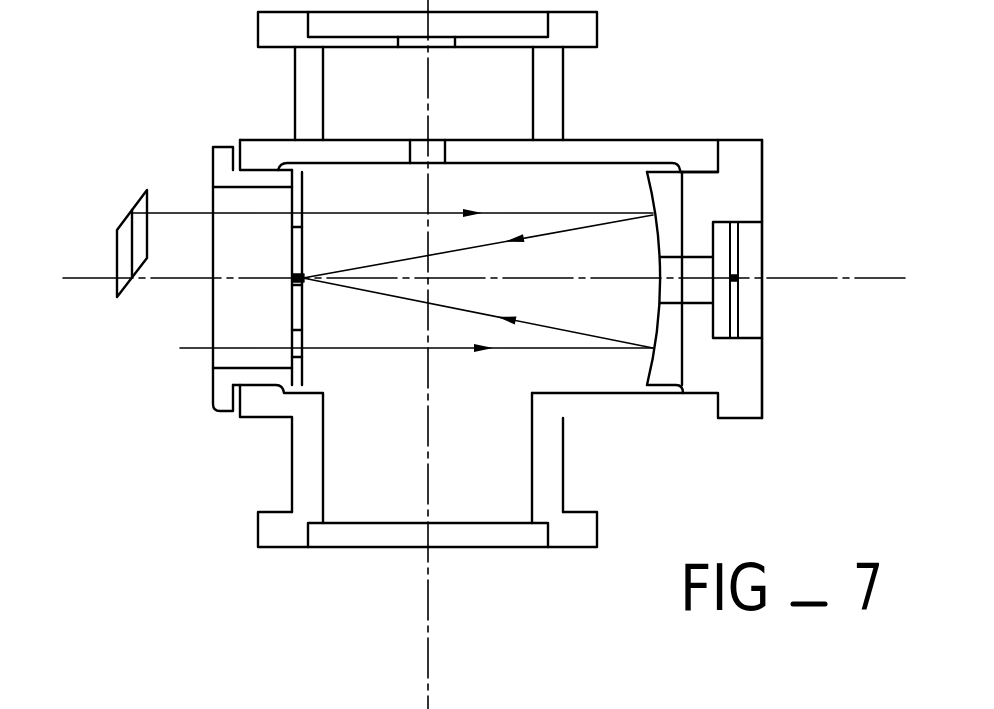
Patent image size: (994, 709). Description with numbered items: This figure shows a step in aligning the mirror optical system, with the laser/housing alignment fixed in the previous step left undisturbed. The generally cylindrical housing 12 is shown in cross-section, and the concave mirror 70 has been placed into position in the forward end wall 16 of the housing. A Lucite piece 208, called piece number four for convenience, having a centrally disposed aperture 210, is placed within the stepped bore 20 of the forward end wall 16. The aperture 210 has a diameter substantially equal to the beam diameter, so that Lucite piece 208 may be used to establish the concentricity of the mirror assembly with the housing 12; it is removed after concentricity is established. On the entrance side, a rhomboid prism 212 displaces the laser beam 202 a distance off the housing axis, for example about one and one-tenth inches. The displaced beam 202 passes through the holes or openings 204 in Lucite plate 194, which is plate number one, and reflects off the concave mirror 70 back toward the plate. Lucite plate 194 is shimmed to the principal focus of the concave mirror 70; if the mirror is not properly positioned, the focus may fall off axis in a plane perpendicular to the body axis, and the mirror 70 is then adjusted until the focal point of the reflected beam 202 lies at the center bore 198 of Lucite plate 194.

The main support body or housing 12 is at (612, 150).
The forward end wall 16 is at (745, 140).
The stepped bore 20 is at (750, 229).
The concave mirror 70 is at (668, 185).
The Lucite plate 194 is at (294, 312).
The centrally disposed bore 198 is at (305, 276).
The laser beam 202 is at (558, 283).
The additional ports 204 is at (298, 200).
The Lucite piece 208 is at (740, 253).
The centrally disposed aperture 210 is at (747, 278).
The rhomboid prism 212 is at (118, 228).